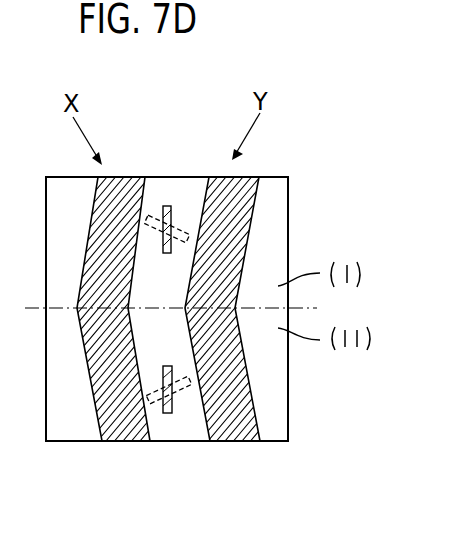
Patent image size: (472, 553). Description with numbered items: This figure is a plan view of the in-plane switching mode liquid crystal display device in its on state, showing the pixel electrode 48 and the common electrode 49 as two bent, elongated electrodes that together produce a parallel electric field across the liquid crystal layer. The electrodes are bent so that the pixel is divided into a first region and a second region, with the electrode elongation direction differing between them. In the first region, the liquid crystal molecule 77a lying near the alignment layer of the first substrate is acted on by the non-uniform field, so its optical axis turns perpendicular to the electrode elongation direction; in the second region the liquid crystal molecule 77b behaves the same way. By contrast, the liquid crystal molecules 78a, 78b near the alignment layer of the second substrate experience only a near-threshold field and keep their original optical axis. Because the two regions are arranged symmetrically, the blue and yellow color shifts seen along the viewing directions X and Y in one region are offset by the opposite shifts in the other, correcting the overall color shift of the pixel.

The pixel electrode 48 is at (110, 443).
The common electrode 49 is at (240, 443).
The liquid crystal molecule 77a is at (151, 217).
The liquid crystal molecule 77b is at (158, 400).
The liquid crystal molecule 78a is at (173, 212).
The liquid crystal molecule 78b is at (172, 412).